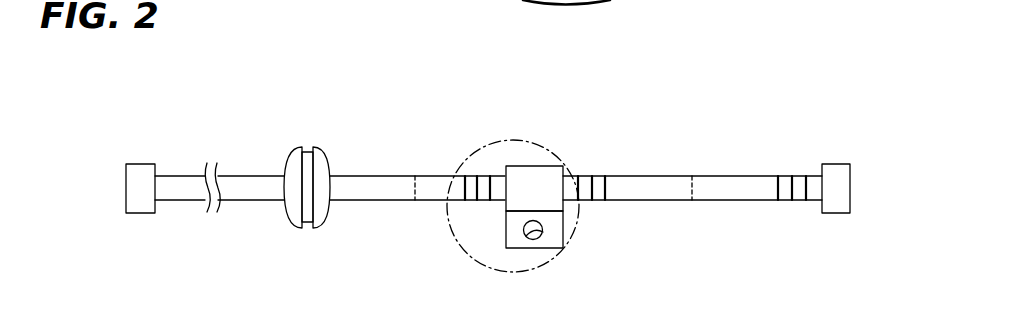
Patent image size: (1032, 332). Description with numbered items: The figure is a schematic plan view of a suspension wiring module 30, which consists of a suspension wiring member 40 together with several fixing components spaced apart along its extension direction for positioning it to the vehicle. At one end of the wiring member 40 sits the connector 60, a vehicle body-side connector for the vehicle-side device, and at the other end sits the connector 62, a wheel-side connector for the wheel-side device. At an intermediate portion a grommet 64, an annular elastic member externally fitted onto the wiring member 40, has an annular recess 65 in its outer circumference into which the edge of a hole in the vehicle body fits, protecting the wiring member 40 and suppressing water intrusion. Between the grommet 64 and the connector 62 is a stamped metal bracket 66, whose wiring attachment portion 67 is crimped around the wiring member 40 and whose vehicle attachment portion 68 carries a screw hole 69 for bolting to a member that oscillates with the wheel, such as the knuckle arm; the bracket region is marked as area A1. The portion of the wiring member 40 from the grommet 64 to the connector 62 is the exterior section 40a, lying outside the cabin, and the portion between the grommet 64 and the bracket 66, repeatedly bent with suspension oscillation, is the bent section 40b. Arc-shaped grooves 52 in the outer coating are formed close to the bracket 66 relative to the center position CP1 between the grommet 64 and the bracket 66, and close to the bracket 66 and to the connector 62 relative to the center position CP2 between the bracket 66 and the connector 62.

The wiring module 30 is at (256, 108).
The suspension wiring member 40 is at (229, 201).
The exterior section 40a is at (652, 176).
The bent section 40b is at (365, 176).
The arc-shaped grooves 52 is at (490, 176).
The connector 60 is at (141, 213).
The connector 62 is at (833, 214).
The grommet 64 is at (287, 222).
The annular recess 65 is at (307, 229).
The bracket 66 is at (570, 93).
The wiring attachment portion 67 is at (515, 173).
The vehicle attachment portion 68 is at (552, 218).
The screw hole 69 is at (533, 240).
The center position CP1 is at (412, 188).
The center position CP2 is at (693, 190).
The region A1 is at (507, 273).